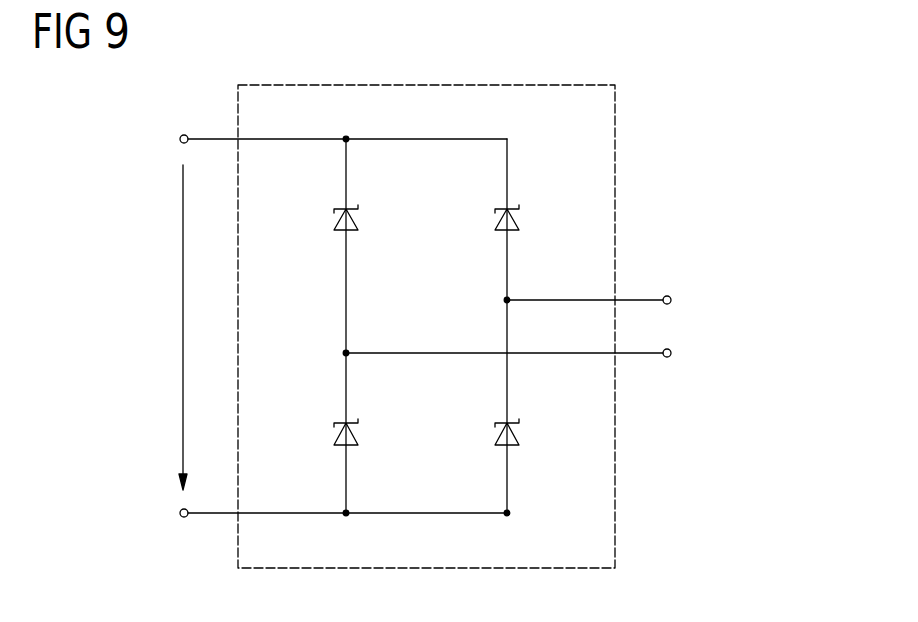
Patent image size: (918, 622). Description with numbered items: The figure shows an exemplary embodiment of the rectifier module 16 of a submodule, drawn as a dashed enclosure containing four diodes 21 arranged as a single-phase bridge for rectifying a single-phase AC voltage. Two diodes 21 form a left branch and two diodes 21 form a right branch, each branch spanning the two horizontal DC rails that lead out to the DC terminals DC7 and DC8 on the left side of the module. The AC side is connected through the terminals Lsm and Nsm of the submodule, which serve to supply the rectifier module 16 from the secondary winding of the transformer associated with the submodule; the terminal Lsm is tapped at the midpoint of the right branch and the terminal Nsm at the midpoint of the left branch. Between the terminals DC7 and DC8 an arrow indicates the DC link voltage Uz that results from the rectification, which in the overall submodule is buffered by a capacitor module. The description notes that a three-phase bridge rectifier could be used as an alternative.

The rectifier module 16 is at (237, 555).
The diode 21 is at (334, 220).
The DC terminal DC7 is at (180, 139).
The DC terminal DC8 is at (180, 513).
The terminal Lsm is at (671, 300).
The terminal Nsm is at (671, 353).
The DC link voltage Uz is at (181, 324).